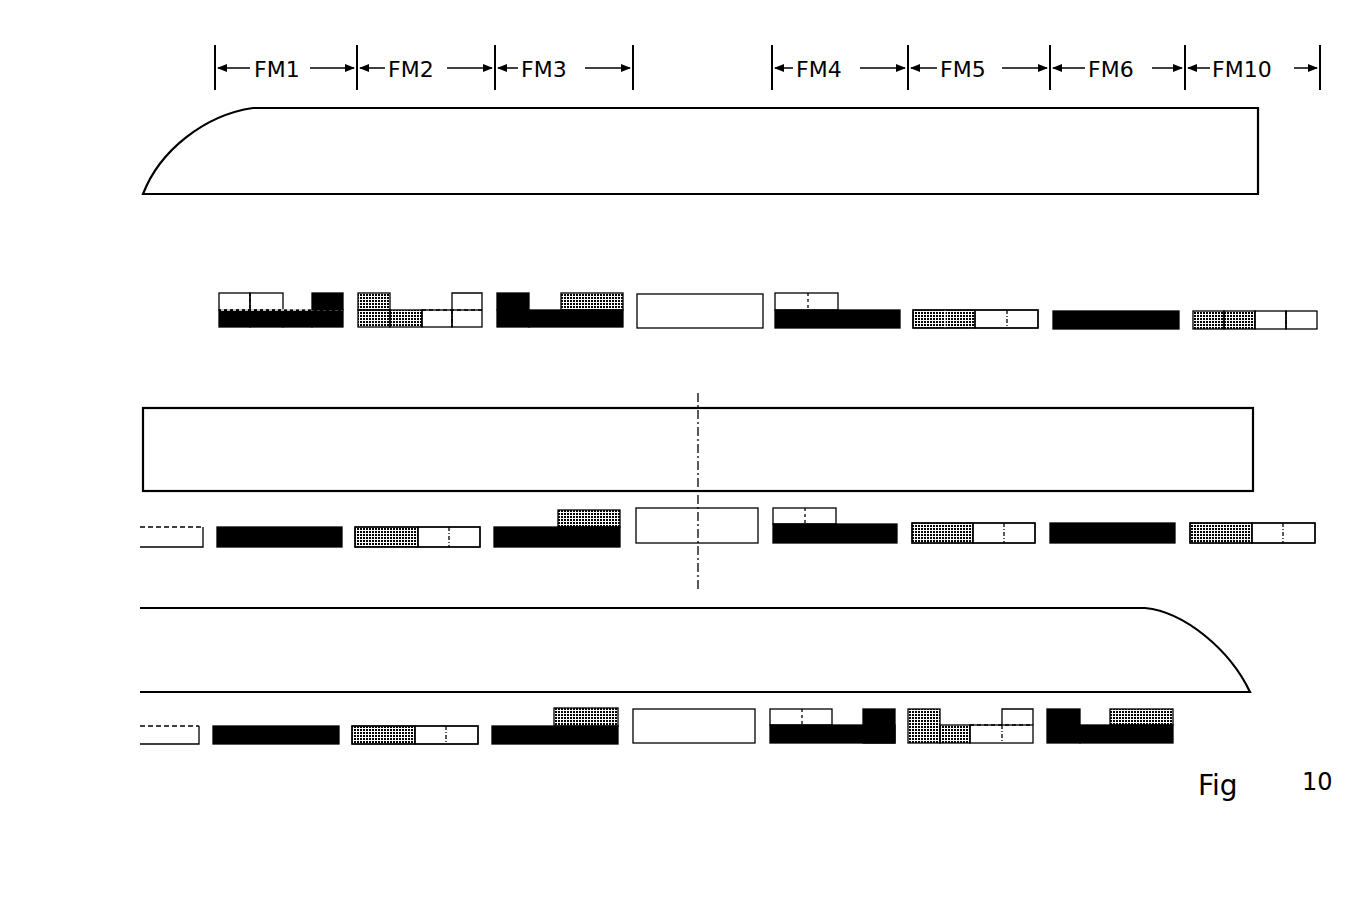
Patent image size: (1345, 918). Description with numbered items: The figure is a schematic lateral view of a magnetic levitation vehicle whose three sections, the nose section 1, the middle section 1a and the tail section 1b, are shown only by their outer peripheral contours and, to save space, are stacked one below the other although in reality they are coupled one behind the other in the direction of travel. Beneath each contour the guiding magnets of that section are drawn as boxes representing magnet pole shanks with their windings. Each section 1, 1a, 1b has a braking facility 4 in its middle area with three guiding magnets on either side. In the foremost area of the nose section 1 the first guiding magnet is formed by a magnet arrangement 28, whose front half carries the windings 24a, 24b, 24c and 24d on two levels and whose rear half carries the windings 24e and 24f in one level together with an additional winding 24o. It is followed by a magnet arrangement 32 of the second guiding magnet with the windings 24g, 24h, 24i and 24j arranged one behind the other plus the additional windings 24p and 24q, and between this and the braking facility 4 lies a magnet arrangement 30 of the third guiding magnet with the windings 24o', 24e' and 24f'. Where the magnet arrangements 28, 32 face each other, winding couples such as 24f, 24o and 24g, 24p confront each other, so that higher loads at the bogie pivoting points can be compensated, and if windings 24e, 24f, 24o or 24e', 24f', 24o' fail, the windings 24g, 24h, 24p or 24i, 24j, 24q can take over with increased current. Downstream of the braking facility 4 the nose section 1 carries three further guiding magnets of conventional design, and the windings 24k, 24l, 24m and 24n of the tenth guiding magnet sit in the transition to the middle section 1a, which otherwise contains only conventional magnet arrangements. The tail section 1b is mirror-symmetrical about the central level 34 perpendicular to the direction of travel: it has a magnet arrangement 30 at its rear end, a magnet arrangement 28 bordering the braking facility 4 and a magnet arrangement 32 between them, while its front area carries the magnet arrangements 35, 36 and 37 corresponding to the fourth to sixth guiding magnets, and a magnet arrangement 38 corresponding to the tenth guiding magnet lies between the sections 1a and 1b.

The nose section 1 is at (1240, 146).
The middle section 1a is at (1240, 453).
The tail section 1b is at (1183, 648).
The braking facility 4 is at (702, 300).
The magnet arrangement 28 is at (526, 517).
The magnet arrangement 30 is at (828, 510).
The magnet arrangement 32 is at (695, 506).
The central level 34 is at (700, 403).
The magnet arrangement 35 is at (535, 747).
The magnet arrangement 36 is at (395, 747).
The magnet arrangement 37 is at (283, 748).
The magnet arrangement 38 is at (1243, 542).
The winding 24a is at (228, 327).
The winding 24b is at (262, 327).
The winding 24c is at (232, 292).
The winding 24d is at (267, 292).
The winding 24e is at (296, 346).
The winding 24f is at (327, 337).
The winding 24g is at (374, 327).
The winding 24h is at (405, 327).
The winding 24i is at (436, 318).
The winding 24j is at (466, 318).
The winding 24k is at (1203, 311).
The winding 24l is at (1240, 311).
The winding 24m is at (1268, 322).
The winding 24n is at (1303, 322).
The winding 24o is at (324, 274).
The winding 24p is at (372, 292).
The winding 24q is at (467, 295).
The winding 24o' is at (516, 276).
The winding 24e' is at (571, 341).
The winding 24f' is at (506, 353).